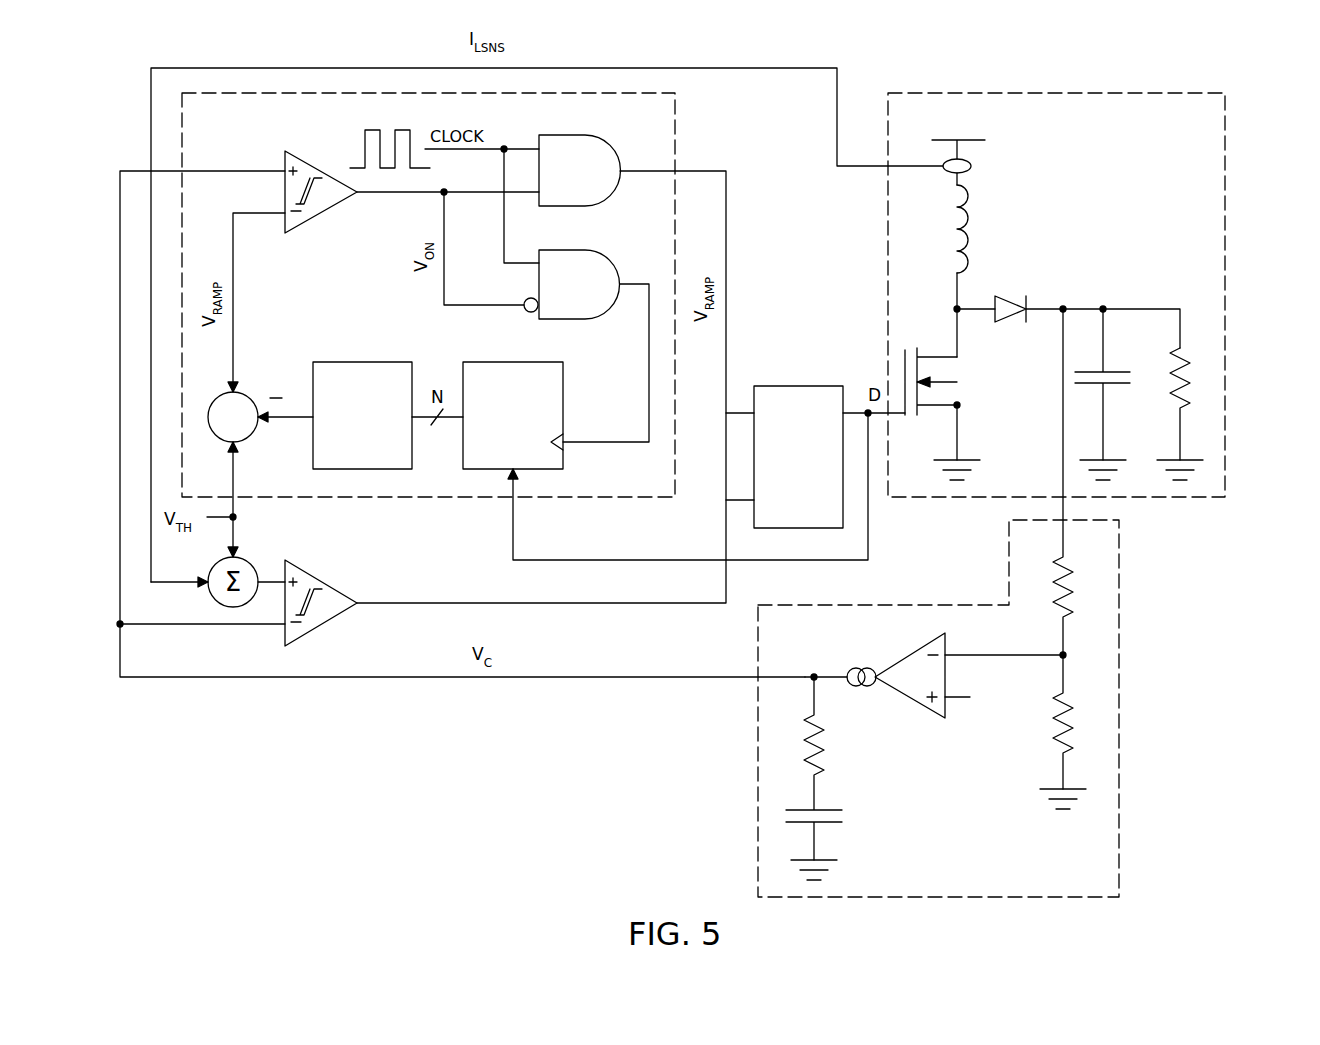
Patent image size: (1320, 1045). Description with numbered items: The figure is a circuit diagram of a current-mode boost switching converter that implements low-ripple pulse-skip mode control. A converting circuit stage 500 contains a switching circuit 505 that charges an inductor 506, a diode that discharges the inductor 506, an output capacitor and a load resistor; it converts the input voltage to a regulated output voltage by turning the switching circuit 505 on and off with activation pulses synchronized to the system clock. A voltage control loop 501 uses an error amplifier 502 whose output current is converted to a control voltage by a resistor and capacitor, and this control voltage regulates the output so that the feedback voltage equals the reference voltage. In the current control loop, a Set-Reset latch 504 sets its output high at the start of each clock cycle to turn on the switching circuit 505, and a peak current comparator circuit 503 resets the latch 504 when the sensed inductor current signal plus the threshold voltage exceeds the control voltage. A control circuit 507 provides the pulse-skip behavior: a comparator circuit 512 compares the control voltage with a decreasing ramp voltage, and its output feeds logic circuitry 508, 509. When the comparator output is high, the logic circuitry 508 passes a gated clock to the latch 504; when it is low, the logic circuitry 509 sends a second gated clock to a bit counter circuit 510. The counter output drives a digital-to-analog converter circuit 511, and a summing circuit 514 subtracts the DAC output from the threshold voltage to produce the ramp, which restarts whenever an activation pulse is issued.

The converting circuit stage 500 is at (1225, 293).
The voltage control loop 501 is at (1119, 705).
The error amplifier 502 is at (905, 655).
The peak current comparator circuit 503 is at (325, 628).
The Set-Reset latch 504 is at (800, 386).
The switching circuit 505 is at (957, 387).
The inductor 506 is at (970, 218).
The control circuit 507 is at (675, 127).
The logic circuitry 508 is at (565, 135).
The logic circuitry 509 is at (565, 250).
The bit counter circuit 510 is at (497, 362).
The digital-to-analog converter circuit 511 is at (365, 362).
The comparator circuit 512 is at (325, 217).
The summing circuit 514 is at (250, 437).